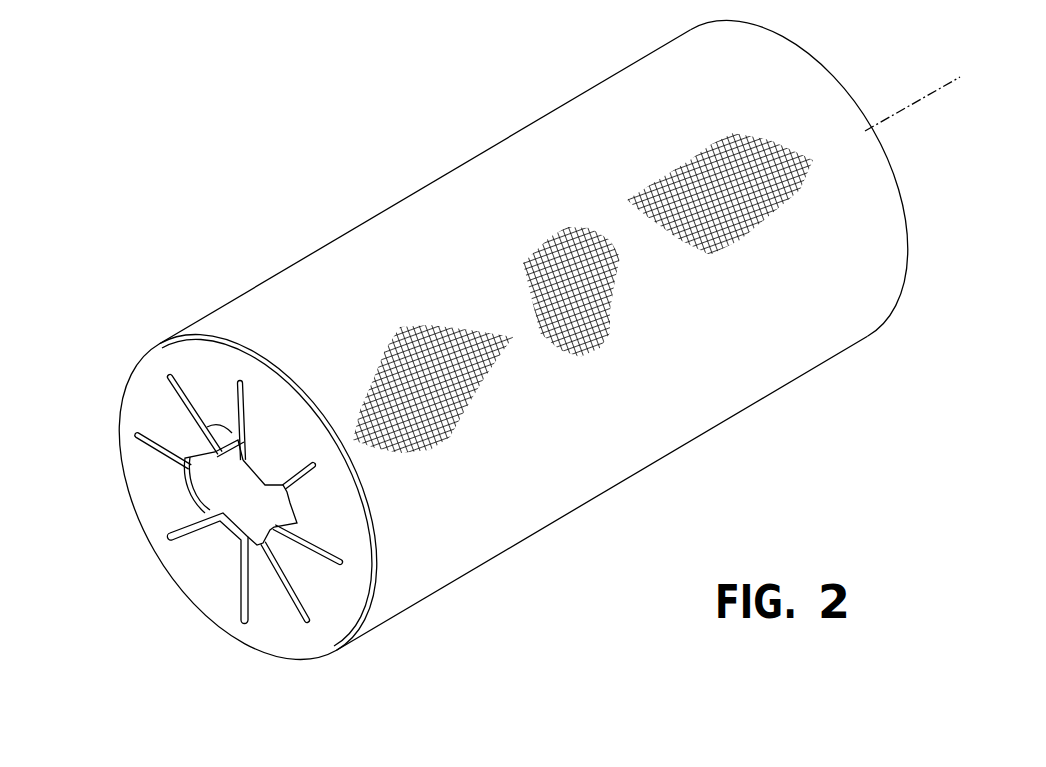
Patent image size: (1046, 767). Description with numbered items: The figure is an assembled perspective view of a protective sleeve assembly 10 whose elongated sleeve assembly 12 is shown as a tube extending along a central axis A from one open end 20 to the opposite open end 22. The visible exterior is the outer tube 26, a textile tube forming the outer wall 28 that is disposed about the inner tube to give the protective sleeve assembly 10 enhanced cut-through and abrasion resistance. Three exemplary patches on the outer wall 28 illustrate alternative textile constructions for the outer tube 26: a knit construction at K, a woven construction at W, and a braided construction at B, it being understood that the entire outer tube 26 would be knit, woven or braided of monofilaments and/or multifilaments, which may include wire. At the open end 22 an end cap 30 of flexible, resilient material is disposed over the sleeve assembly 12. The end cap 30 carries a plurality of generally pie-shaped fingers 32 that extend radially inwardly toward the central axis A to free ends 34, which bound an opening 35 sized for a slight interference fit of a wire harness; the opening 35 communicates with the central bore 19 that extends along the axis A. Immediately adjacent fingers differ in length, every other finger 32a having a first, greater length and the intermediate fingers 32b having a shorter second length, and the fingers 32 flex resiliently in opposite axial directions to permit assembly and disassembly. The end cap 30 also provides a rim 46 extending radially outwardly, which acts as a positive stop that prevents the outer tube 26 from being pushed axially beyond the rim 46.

The protective sleeve assembly 10 is at (317, 150).
The sleeve assembly 12 is at (534, 331).
The open end 20 is at (808, 62).
The open end 22 is at (372, 613).
The outer tube 26 is at (768, 442).
The outer wall 28 is at (560, 128).
The end cap 30 is at (138, 432).
The fingers 32 is at (263, 500).
The finger of first length 32a is at (213, 492).
The intermediate finger of second length 32b is at (215, 413).
The free ends 34 is at (263, 550).
The bore 19 is at (185, 462).
The opening 35 is at (230, 449).
The rim 46 is at (327, 655).
The central axis A is at (897, 115).
The braided patch B is at (437, 363).
The woven patch W is at (577, 287).
The knit patch K is at (747, 167).